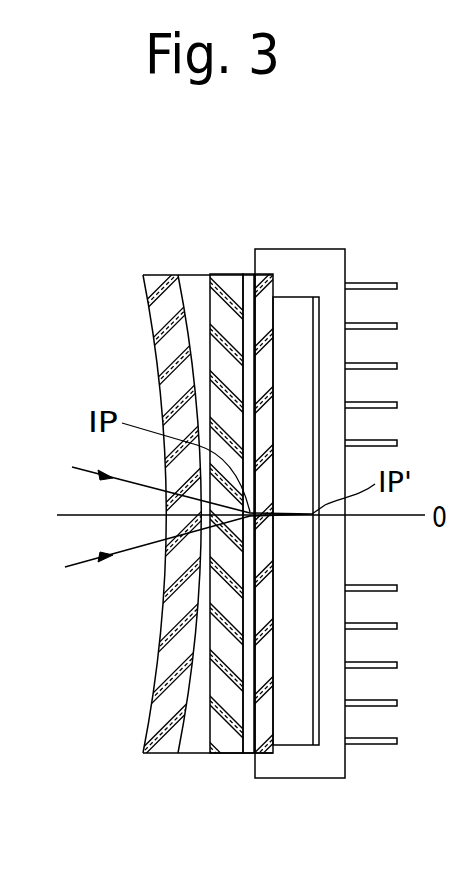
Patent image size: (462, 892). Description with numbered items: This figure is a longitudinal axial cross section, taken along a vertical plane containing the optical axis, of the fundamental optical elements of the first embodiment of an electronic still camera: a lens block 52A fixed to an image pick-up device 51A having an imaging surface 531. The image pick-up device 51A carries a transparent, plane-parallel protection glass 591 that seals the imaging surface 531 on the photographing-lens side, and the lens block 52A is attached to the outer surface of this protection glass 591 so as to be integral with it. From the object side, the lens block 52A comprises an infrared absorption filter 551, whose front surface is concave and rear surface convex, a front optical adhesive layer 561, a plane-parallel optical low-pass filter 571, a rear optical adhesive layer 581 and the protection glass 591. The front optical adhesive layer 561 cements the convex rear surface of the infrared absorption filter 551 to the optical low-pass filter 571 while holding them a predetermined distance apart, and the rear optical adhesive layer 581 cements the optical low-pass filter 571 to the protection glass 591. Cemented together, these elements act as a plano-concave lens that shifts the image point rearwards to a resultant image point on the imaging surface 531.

The lens block 52A is at (265, 187).
The infrared absorption filter 551 is at (148, 273).
The front optical adhesive layer 561 is at (193, 740).
The optical low-pass filter 571 is at (223, 283).
The rear optical adhesive layer 581 is at (248, 752).
The protection glass 591 is at (266, 278).
The image pick-up device 51A is at (328, 267).
The imaging surface 531 is at (313, 576).